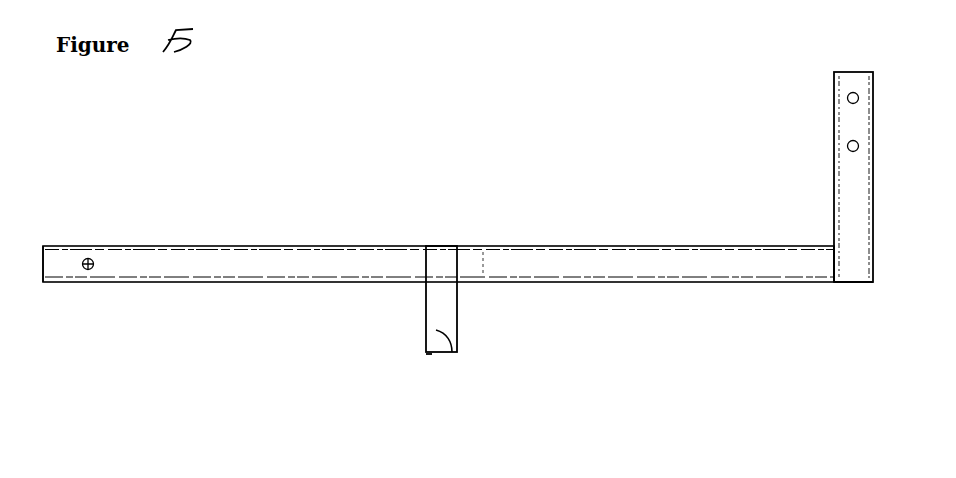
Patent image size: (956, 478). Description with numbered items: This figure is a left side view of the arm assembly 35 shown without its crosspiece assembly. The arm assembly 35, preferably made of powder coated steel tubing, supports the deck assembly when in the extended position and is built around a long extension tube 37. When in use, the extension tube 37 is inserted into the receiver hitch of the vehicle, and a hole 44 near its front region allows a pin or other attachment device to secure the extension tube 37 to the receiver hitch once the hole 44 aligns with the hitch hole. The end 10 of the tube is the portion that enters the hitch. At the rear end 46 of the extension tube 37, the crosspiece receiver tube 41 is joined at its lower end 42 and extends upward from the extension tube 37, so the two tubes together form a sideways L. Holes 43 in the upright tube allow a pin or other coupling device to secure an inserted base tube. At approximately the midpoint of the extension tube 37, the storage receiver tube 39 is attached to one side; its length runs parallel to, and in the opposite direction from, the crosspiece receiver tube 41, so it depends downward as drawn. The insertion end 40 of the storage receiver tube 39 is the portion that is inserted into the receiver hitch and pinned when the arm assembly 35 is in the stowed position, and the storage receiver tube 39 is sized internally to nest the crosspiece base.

The arm assembly 35 is at (392, 134).
The extension tube 37 is at (338, 262).
The bar end 10 is at (54, 265).
The hole 44 is at (92, 268).
The storage receiver tube 39 is at (447, 352).
The insertion end 40 is at (433, 352).
The crosspiece receiver tube 41 is at (855, 200).
The holes 43 is at (849, 97).
The lower end 42 is at (855, 283).
The rear end 46 is at (836, 266).